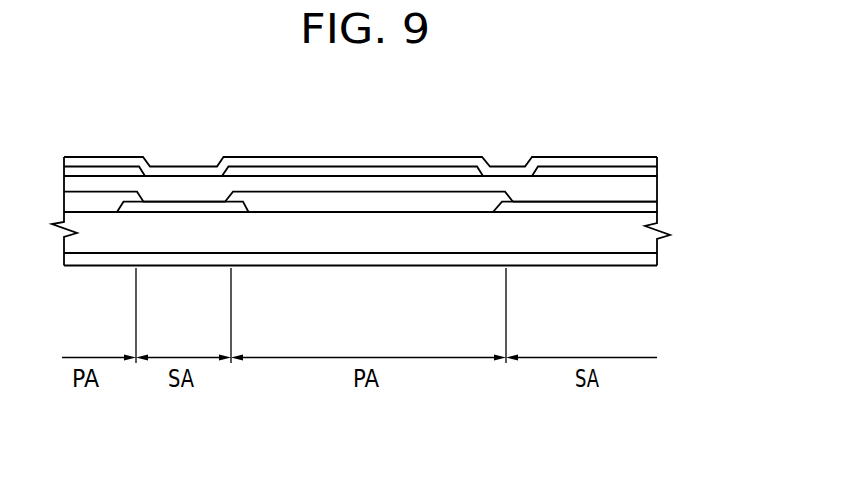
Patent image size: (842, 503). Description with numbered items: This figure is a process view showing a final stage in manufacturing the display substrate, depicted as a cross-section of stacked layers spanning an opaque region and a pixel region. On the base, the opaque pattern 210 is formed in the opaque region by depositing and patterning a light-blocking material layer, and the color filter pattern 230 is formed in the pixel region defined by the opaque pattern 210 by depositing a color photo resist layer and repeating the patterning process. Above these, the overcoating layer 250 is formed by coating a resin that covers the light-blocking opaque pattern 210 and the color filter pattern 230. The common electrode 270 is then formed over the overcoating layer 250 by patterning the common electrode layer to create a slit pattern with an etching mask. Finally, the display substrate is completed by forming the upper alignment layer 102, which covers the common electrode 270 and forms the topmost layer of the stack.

The upper alignment layer 102 is at (655, 161).
The opaque pattern 210 is at (577, 208).
The color filter pattern 230 is at (360, 205).
The overcoating layer 250 is at (416, 188).
The common electrode 270 is at (298, 172).